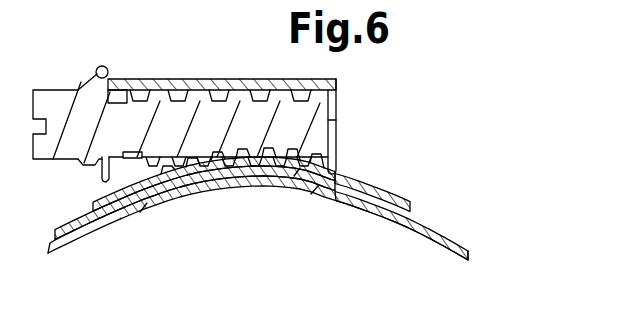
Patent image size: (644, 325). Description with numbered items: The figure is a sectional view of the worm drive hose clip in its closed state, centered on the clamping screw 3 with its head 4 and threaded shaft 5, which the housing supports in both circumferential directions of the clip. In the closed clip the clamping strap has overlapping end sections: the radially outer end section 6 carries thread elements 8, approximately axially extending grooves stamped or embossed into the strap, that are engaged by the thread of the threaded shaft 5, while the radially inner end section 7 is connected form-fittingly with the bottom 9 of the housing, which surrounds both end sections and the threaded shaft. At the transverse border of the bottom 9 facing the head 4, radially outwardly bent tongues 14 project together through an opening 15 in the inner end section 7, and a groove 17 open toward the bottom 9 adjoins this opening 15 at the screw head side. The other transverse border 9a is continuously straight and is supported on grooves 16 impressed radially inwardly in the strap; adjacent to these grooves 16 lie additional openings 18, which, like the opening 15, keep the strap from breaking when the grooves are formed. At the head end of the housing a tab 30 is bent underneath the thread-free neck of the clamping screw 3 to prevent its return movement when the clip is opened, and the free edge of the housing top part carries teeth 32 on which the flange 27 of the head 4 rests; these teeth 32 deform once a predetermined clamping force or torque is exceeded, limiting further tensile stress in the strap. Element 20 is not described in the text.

The clamping screw 3 is at (54, 74).
The head 4 is at (44, 160).
The threaded shaft 5 is at (313, 123).
The radially outer end section 6 is at (88, 202).
The radially inner end section 7 is at (78, 232).
The thread elements 8 is at (348, 183).
The bottom 9 is at (258, 183).
The transverse border 9a is at (314, 192).
The tongues 14 is at (194, 182).
The opening 15 is at (228, 184).
The grooves 16 is at (348, 203).
The groove 17 is at (143, 208).
The additional openings 18 is at (297, 181).
The cover bar 20 is at (218, 78).
The flange 27 is at (101, 65).
The tab 30 is at (138, 152).
The teeth 32 is at (97, 78).